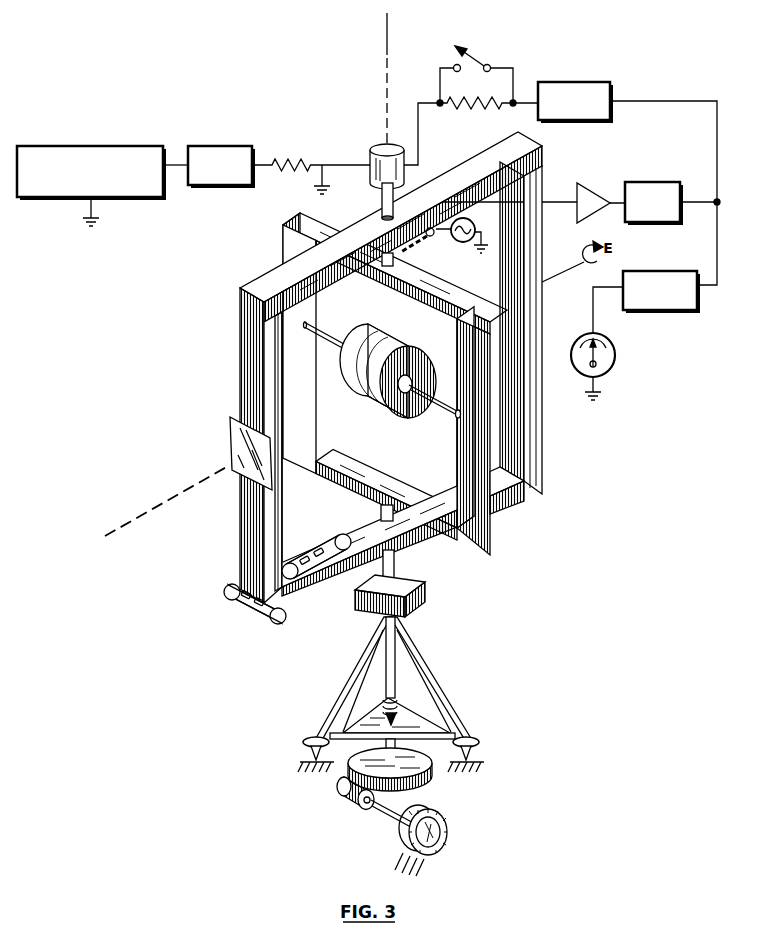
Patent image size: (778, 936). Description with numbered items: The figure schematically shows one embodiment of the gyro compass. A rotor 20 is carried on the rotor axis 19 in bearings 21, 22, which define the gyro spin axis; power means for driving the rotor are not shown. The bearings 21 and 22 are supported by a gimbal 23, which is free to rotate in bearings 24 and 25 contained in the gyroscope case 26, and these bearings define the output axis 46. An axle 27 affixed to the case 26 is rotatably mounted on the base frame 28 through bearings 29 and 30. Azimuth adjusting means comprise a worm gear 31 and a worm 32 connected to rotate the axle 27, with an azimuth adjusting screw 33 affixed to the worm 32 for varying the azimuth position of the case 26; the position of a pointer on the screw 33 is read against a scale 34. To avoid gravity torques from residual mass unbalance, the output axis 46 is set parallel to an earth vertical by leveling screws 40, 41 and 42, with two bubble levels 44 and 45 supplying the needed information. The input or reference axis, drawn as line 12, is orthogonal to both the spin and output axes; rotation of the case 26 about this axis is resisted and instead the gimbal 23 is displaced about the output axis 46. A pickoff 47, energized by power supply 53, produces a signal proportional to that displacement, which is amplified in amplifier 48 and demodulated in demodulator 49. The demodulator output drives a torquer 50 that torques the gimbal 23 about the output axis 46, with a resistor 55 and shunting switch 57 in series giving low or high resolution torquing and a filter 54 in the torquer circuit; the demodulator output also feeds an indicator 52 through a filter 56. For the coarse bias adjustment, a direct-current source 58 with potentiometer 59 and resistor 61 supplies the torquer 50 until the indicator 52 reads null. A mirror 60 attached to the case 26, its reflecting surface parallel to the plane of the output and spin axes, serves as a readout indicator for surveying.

The input axis 12 is at (135, 516).
The rotor axis 19 is at (449, 420).
The rotor 20 is at (400, 413).
The bearing 21 is at (318, 324).
The bearing 22 is at (466, 407).
The gimbal 23 is at (489, 513).
The bearing 24 is at (382, 212).
The bearing 25 is at (380, 515).
The gyroscope case 26 is at (246, 379).
The axle 27 is at (398, 568).
The base frame 28 is at (446, 683).
The bearing 29 is at (414, 582).
The bearing 30 is at (396, 709).
The worm gear 31 is at (432, 781).
The worm 32 is at (352, 800).
The azimuth adjusting screw 33 is at (444, 840).
The scale 34 is at (442, 812).
The leveling screw 40 is at (311, 758).
The leveling screw 41 is at (472, 758).
The leveling screw 42 is at (382, 708).
The bubble level 44 is at (262, 614).
The bubble level 45 is at (331, 546).
The output axis 46 is at (388, 59).
The pickoff 47 is at (430, 237).
The amplifier 48 is at (587, 192).
The demodulator 49 is at (649, 183).
The torquer 50 is at (380, 147).
The indicator 52 is at (608, 352).
The power supply 53 is at (462, 243).
The filter 54 is at (593, 84).
The resistor 55 is at (493, 103).
The filter 56 is at (655, 303).
The shunting switch 57 is at (474, 61).
The direct-current source 58 is at (141, 150).
The potentiometer 59 is at (233, 186).
The mirror 60 is at (235, 448).
The resistor 61 is at (298, 163).